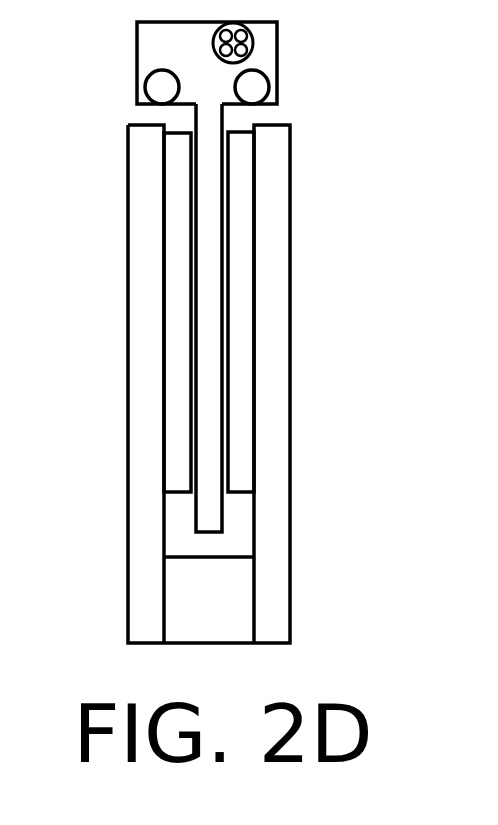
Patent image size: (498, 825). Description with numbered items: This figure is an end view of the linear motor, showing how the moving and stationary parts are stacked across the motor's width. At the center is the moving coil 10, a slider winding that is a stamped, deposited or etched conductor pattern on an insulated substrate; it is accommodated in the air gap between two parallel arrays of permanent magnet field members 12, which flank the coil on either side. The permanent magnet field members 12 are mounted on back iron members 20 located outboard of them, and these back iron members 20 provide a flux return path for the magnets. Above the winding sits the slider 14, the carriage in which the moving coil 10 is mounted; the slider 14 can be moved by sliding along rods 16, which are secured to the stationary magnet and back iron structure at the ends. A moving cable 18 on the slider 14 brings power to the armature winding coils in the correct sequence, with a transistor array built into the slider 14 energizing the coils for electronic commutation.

The moving coil 10 is at (207, 373).
The permanent magnet field members 12 is at (178, 207).
The slider 14 is at (157, 30).
The rods 16 is at (160, 82).
The moving cable 18 is at (252, 36).
The back iron members 20 is at (145, 308).